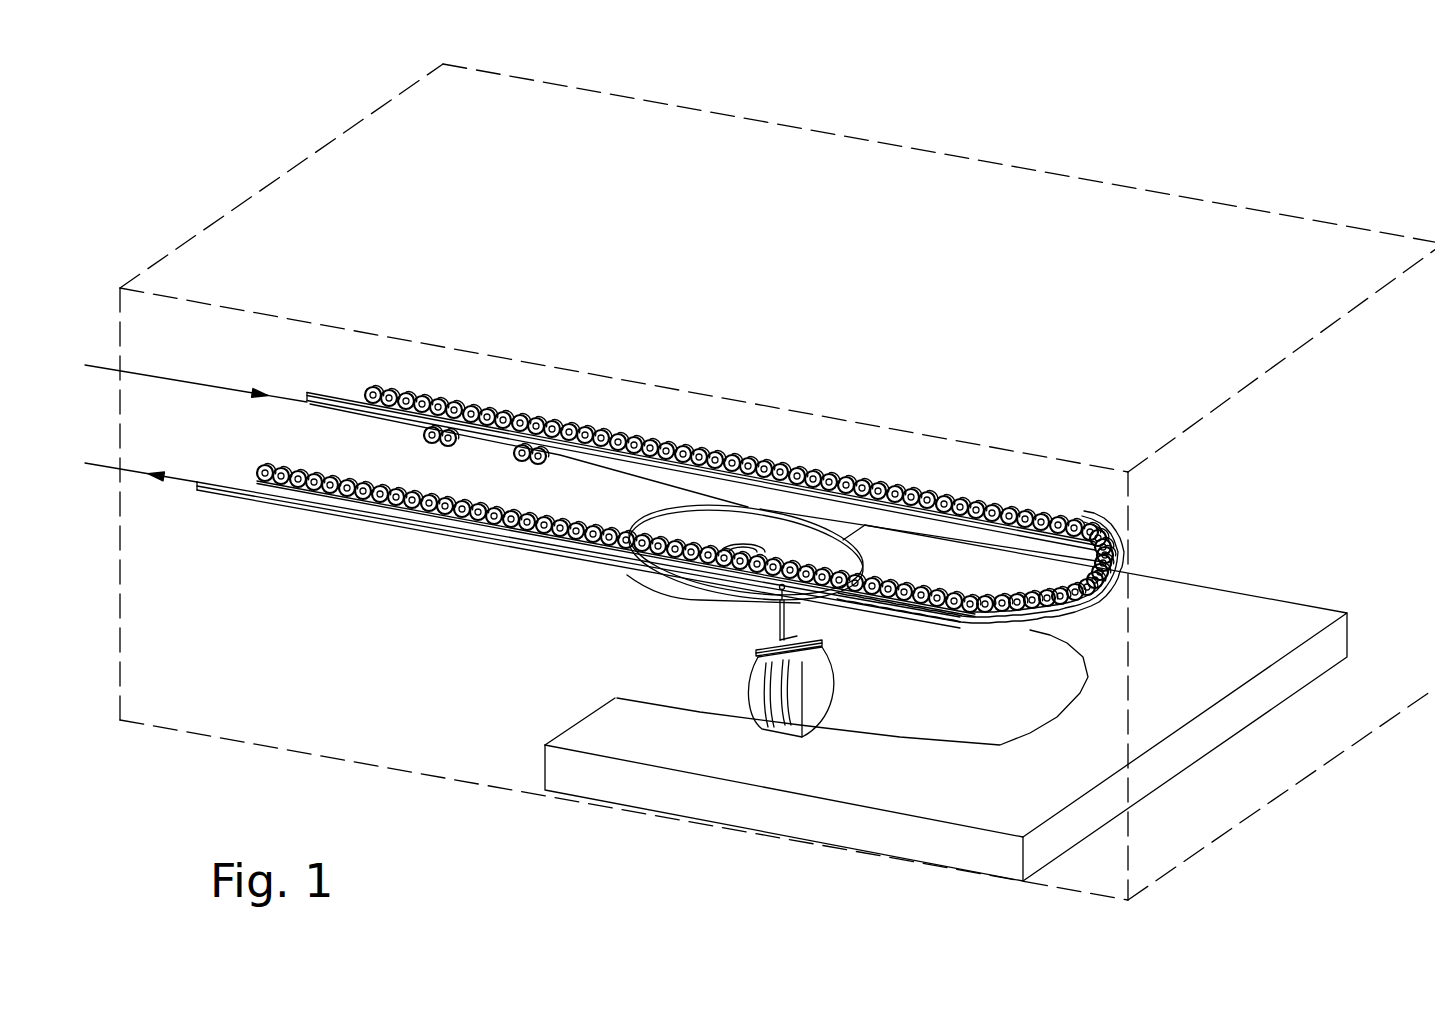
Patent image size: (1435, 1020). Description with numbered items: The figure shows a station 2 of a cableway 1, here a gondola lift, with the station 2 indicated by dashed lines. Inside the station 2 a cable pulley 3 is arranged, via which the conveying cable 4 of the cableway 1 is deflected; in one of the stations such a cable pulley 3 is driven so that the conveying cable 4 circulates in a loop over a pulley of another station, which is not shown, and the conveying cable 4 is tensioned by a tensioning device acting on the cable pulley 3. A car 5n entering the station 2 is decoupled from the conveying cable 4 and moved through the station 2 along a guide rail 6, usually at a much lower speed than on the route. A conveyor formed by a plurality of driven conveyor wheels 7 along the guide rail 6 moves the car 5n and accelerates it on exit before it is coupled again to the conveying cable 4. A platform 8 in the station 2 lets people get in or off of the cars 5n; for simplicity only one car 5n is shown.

The cableway 1 is at (958, 125).
The station 2 is at (1072, 178).
The cable pulley 3 is at (772, 532).
The conveying cable 4 is at (178, 380).
The car 5n is at (747, 672).
The guide rail 6 is at (457, 535).
The driven conveyor wheels 7 is at (578, 432).
The platform 8 is at (792, 770).